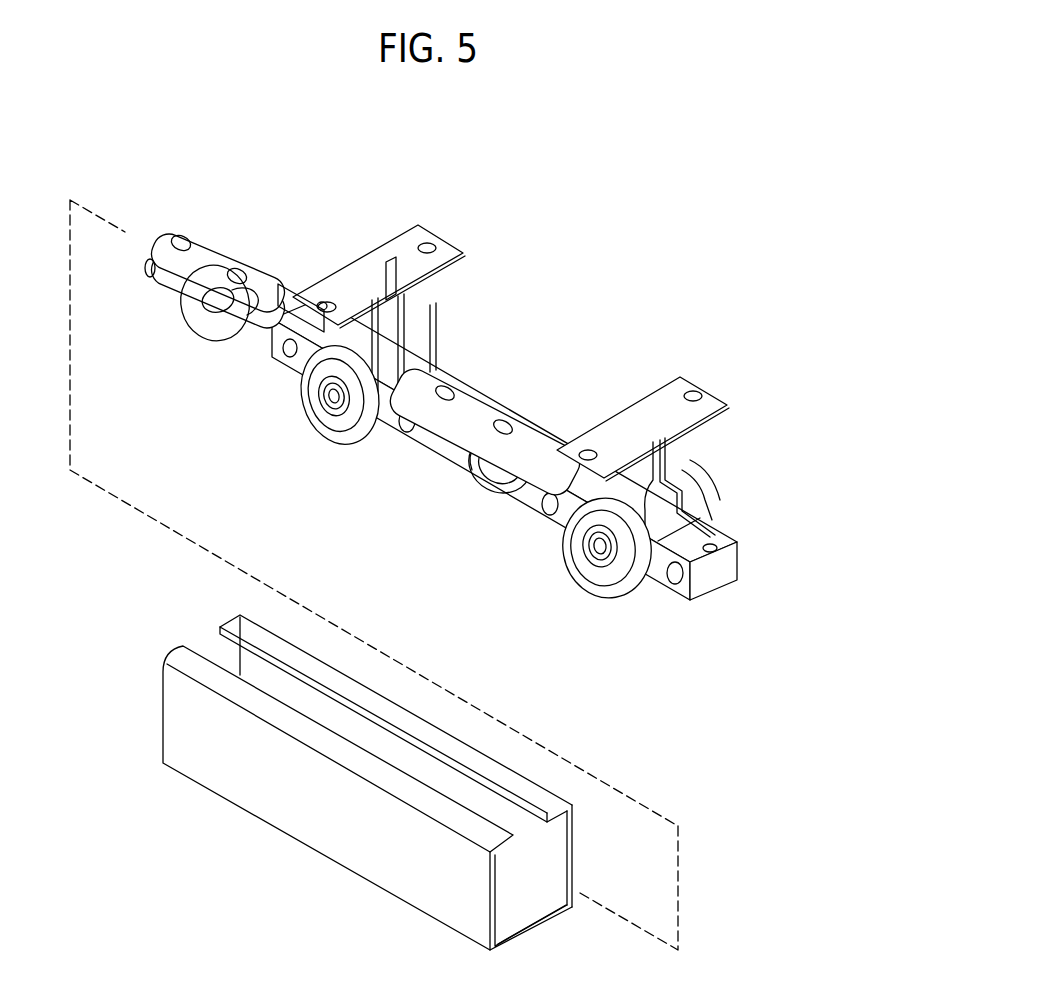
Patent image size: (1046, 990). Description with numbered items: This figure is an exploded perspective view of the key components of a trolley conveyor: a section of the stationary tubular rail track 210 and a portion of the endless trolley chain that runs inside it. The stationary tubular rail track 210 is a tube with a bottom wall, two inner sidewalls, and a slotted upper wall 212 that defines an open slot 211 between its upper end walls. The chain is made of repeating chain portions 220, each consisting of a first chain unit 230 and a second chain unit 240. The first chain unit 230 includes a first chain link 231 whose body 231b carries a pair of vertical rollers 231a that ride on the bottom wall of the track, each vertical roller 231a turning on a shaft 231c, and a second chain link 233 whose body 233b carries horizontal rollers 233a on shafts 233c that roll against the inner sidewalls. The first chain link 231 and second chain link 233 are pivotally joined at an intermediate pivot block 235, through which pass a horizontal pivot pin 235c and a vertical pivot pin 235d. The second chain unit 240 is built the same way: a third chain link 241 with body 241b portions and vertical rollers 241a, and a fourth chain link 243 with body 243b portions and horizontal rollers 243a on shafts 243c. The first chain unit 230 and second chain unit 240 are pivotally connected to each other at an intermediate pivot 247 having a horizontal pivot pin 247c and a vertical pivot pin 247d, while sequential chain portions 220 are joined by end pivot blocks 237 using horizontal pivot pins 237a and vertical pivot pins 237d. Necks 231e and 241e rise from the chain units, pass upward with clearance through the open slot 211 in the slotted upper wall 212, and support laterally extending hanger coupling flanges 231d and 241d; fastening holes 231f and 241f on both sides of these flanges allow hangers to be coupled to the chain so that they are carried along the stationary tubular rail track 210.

The stationary tubular rail track 210 is at (183, 713).
The open slot 211 is at (222, 643).
The slotted upper wall 212 is at (558, 780).
The chain portion 220 is at (797, 257).
The first chain unit 230 is at (422, 177).
The first chain link 231 is at (252, 467).
The vertical roller 231a is at (350, 425).
The body 231b is at (395, 448).
The shaft 231c is at (327, 400).
The first hanger coupling flange 231d is at (440, 447).
The first neck 231e is at (375, 432).
The first fastening hole 231f is at (432, 246).
The second chain link 233 is at (160, 423).
The horizontal roller 233a is at (207, 313).
The body 233b is at (177, 287).
The shaft 233c is at (250, 325).
The intermediate pivot block 235 is at (262, 313).
The horizontal pivot pin 235c is at (296, 292).
The vertical pivot pin 235d is at (300, 297).
The end pivot block 237 is at (140, 263).
The horizontal pivot pin 237a is at (150, 258).
The vertical pivot pin 237d is at (183, 237).
The second chain unit 240 is at (712, 331).
The third chain link 241 is at (857, 515).
The vertical roller 241a is at (640, 540).
The body 241b is at (725, 538).
The second hanger coupling flange 241d is at (668, 420).
The second neck 241e is at (667, 455).
The second fastening hole 241f is at (700, 393).
The fourth chain link 243 is at (523, 440).
The horizontal roller 243a is at (545, 440).
The body 243b is at (568, 445).
The shaft 243c is at (522, 430).
The intermediate pivot 247 is at (455, 402).
The horizontal pivot pin 247c is at (392, 262).
The vertical pivot pin 247d is at (441, 362).